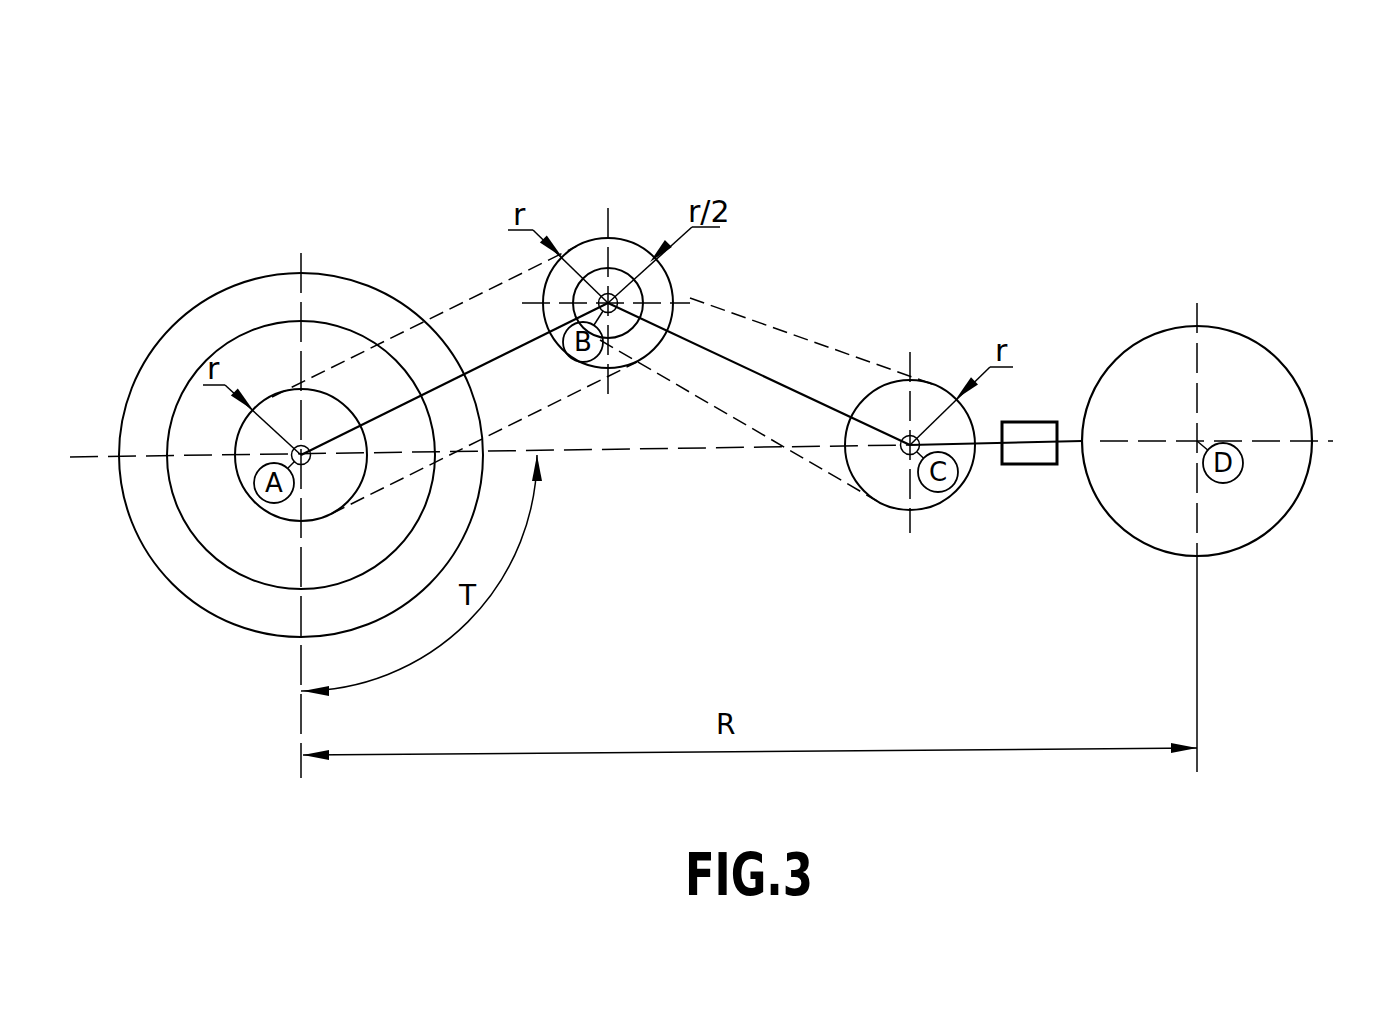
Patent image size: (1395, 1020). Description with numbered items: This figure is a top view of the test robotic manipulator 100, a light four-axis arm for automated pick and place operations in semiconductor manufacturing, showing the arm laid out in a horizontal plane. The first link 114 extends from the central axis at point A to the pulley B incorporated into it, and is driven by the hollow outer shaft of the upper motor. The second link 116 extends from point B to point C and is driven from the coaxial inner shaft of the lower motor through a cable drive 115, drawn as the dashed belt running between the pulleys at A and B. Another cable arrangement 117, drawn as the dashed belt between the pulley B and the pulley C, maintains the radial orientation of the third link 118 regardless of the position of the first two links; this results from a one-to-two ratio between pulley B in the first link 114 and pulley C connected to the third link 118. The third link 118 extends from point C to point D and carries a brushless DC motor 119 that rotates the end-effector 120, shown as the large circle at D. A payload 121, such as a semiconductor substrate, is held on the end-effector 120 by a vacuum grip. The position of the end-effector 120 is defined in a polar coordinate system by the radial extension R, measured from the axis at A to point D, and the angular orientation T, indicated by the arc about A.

The robotic manipulator 100 is at (803, 100).
The first link 114 is at (510, 350).
The cable drive 115 is at (462, 303).
The second link 116 is at (720, 352).
The cable arrangement 117 is at (817, 341).
The third link 118 is at (983, 449).
The brushless DC motor 119 is at (1015, 422).
The end-effector 120 is at (1302, 490).
The payload 121 is at (1248, 385).